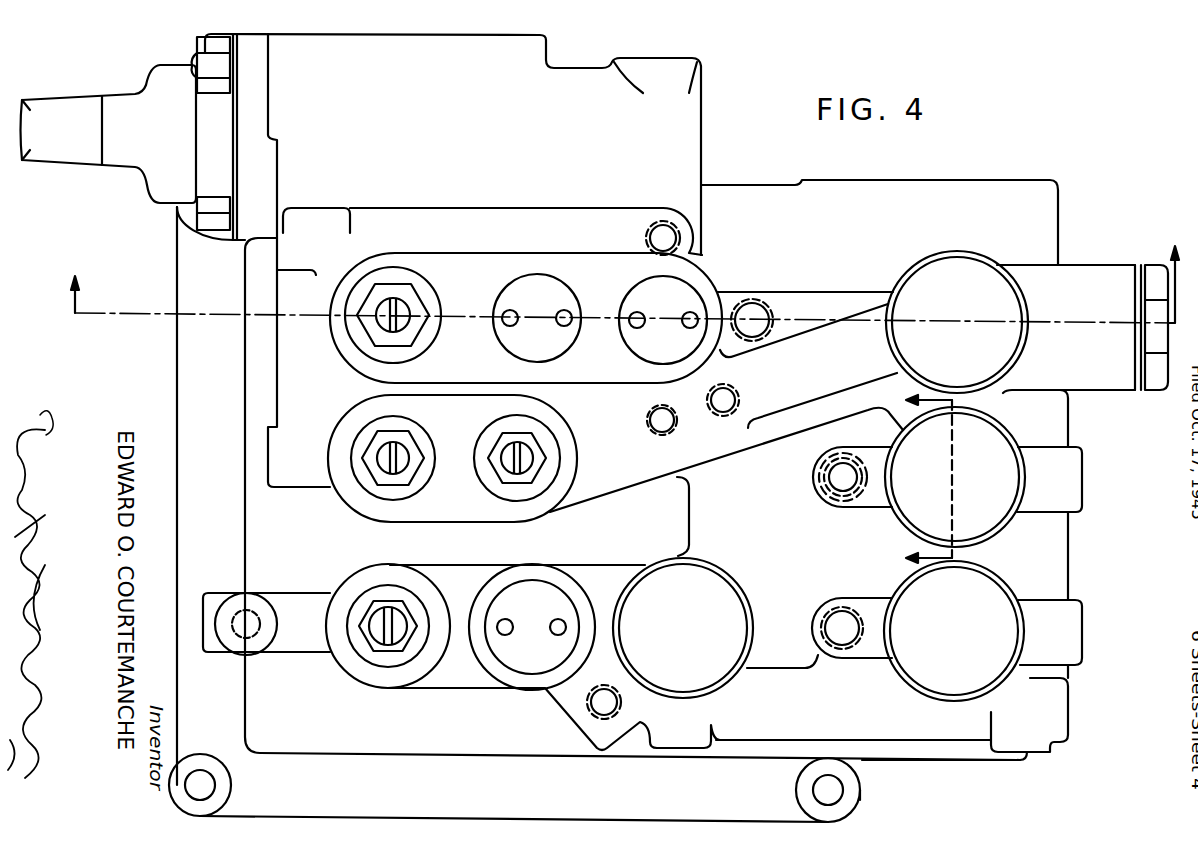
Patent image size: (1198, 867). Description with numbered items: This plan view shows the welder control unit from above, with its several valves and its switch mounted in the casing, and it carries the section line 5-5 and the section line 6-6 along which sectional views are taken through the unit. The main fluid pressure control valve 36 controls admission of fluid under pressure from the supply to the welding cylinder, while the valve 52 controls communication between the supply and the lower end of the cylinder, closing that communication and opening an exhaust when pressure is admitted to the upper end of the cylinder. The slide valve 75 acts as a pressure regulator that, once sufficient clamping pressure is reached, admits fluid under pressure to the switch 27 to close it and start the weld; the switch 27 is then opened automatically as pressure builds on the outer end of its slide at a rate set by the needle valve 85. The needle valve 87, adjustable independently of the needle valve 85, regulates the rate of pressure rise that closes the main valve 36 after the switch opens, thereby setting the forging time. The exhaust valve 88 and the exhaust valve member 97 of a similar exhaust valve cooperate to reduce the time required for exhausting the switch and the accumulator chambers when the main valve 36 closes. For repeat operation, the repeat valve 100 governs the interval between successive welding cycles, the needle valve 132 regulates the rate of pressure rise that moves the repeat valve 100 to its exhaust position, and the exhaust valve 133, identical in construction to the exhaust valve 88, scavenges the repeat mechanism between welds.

The section line 5- 5 is at (623, 273).
The section line 6- 6 is at (919, 480).
The switch 27 is at (676, 110).
The main fluid pressure control valve 36 is at (990, 290).
The valve 52 is at (1000, 483).
The slide valve 75 is at (397, 294).
The needle valve 85 is at (394, 458).
The needle valve 87 is at (523, 460).
The exhaust valve 88 is at (672, 293).
The exhaust valve member 97 is at (536, 290).
The repeat valve 100 is at (715, 605).
The needle valve 132 is at (405, 637).
The exhaust valve 133 is at (520, 655).